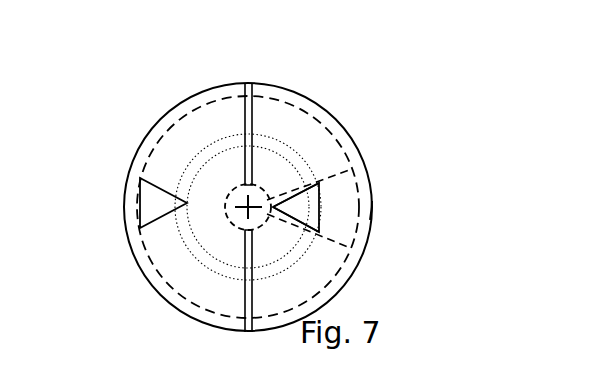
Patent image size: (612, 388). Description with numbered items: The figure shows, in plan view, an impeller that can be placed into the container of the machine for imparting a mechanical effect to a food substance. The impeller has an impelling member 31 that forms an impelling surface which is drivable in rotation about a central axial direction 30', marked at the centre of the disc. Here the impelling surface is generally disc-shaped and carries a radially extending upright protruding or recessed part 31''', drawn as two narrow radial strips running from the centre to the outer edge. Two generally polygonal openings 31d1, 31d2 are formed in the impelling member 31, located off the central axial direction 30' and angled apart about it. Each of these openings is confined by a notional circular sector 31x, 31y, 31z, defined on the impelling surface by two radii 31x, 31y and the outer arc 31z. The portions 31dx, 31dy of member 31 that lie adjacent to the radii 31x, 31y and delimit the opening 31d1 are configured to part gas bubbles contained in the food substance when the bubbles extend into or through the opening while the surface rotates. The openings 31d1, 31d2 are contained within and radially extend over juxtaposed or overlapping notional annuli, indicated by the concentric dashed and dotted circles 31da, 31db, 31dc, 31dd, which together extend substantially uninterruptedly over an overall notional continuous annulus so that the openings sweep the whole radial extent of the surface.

The impelling member 31 is at (248, 198).
The notional circular sector 31z is at (372, 205).
The notional annulus 31db is at (143, 248).
The notional annulus 31dd is at (193, 157).
The notional annulus 31dc is at (193, 182).
The notional annulus 31da is at (233, 230).
The central axial direction 30' is at (173, 243).
The impelling surface 31''' is at (235, 197).
The opening 31d2 is at (140, 205).
The opening 31d1 is at (323, 209).
The portion of member 31dx is at (293, 190).
The portion of member 31dy is at (293, 220).
The radius 31x is at (335, 170).
The radius 31y is at (337, 238).